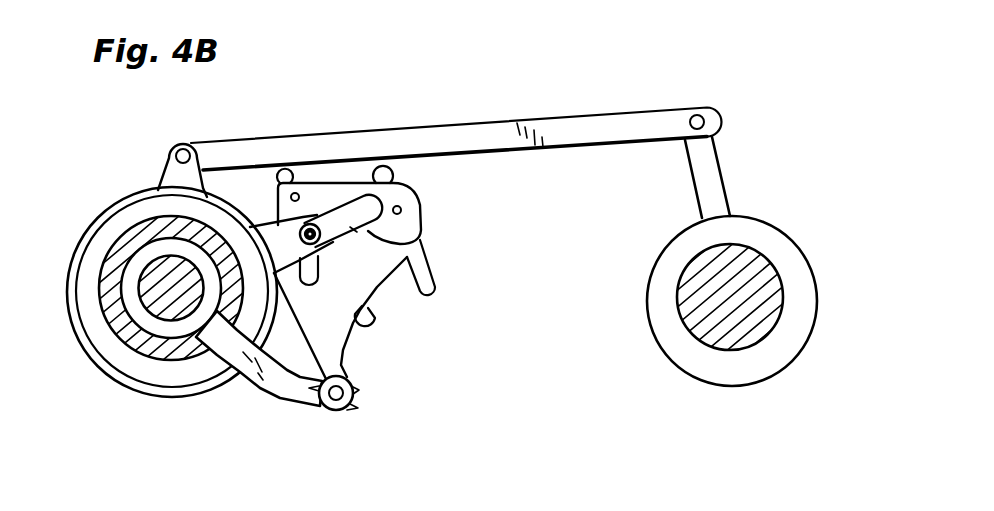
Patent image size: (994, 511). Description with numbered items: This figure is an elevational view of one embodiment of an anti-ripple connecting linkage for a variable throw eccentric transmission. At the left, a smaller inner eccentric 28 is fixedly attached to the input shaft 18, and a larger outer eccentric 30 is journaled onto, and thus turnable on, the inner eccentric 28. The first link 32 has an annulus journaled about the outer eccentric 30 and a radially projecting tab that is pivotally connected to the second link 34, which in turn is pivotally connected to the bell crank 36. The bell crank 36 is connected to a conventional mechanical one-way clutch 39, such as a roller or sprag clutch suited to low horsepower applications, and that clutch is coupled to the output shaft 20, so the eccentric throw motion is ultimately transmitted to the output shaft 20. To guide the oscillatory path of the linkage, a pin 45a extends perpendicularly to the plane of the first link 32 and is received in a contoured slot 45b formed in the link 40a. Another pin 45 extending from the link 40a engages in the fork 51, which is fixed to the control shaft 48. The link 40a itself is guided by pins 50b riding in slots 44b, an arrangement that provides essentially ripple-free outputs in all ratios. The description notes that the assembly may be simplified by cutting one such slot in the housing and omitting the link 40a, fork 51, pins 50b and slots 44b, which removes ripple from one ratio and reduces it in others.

The input shaft 18 is at (152, 293).
The output shaft 20 is at (760, 317).
The inner eccentric 28 is at (128, 237).
The outer eccentric 30 is at (88, 272).
The first link 32 is at (110, 202).
The second link 34 is at (573, 125).
The bell crank 36 is at (713, 183).
The mechanical one-way clutch 39 is at (783, 243).
The link 40a is at (353, 183).
The slots 44b is at (377, 322).
The pin 45 is at (343, 398).
The pin 45a is at (327, 213).
The contoured slot 45b is at (421, 240).
The control shaft 48 is at (147, 320).
The pins 50b is at (297, 194).
The fork 51 is at (260, 385).